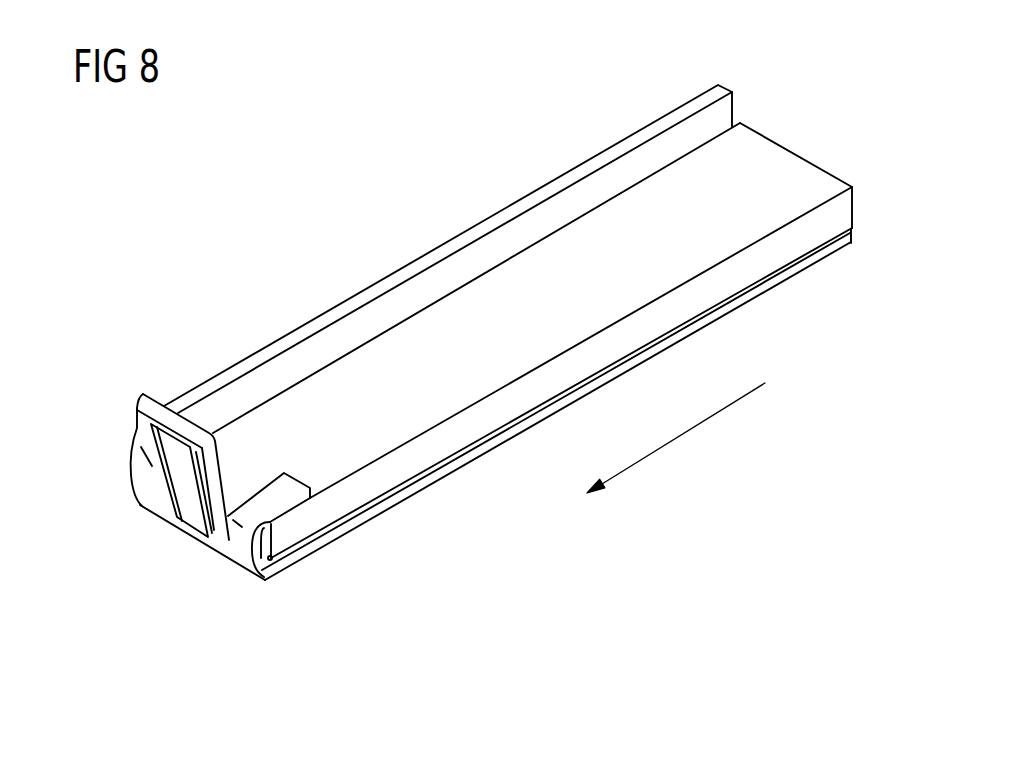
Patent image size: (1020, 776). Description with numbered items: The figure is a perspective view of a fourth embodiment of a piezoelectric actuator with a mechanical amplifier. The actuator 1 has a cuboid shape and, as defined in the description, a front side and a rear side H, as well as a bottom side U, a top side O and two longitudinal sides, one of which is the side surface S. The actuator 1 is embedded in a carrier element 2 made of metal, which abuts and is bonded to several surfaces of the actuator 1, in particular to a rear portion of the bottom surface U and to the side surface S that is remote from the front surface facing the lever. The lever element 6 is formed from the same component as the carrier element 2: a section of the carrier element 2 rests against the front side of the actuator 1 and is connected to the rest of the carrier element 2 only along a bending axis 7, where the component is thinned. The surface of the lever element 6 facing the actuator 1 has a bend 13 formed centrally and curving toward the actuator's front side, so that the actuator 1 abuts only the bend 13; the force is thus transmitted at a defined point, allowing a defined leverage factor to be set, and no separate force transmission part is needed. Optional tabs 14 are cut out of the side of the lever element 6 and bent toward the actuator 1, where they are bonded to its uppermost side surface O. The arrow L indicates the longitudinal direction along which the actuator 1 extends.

The rear side H is at (461, 359).
The actuator 1 is at (496, 332).
The carrier element 2 is at (507, 332).
The top side O is at (389, 348).
The side surface S is at (497, 420).
The bottom side U is at (399, 513).
The longitudinal direction L is at (677, 440).
The bending axis 7 is at (269, 542).
The tabs 14 is at (242, 503).
The lever element 6 is at (197, 517).
The bend 13 is at (183, 467).